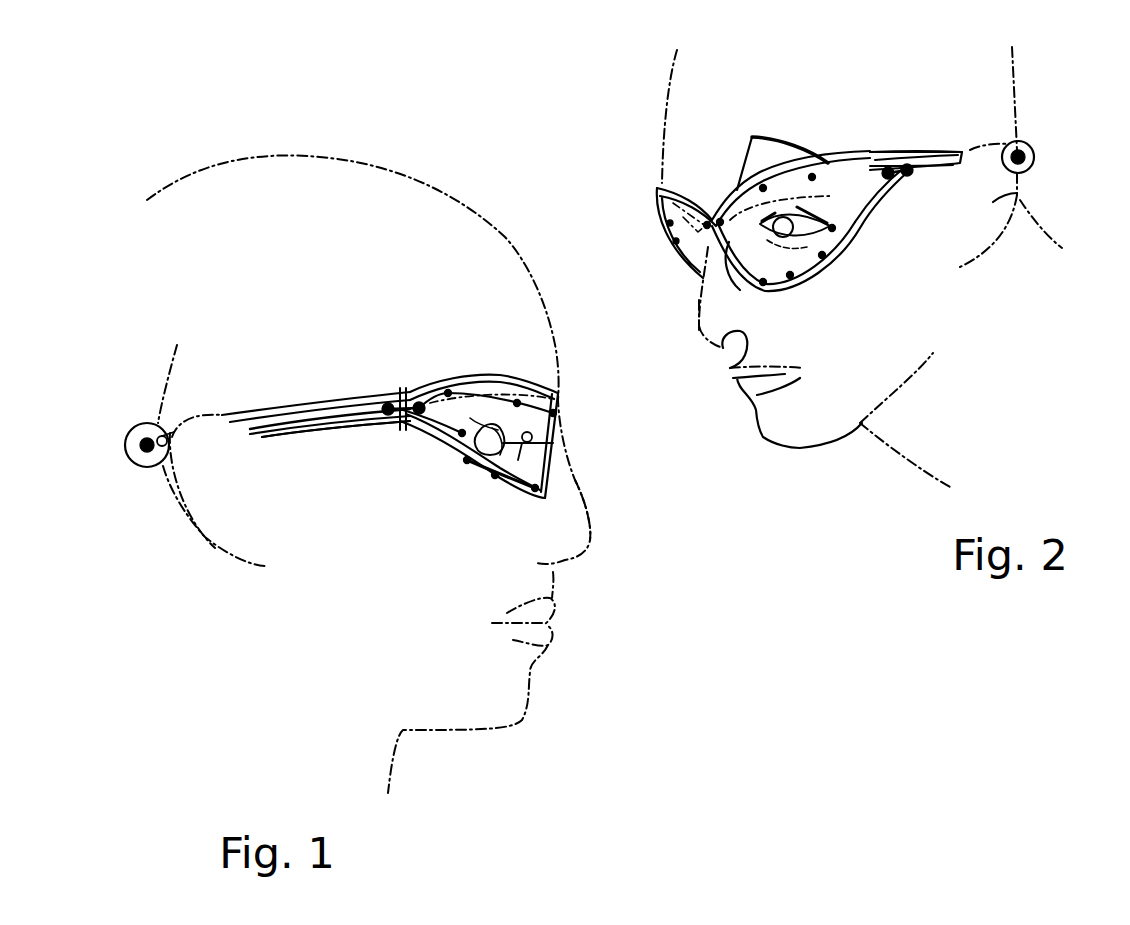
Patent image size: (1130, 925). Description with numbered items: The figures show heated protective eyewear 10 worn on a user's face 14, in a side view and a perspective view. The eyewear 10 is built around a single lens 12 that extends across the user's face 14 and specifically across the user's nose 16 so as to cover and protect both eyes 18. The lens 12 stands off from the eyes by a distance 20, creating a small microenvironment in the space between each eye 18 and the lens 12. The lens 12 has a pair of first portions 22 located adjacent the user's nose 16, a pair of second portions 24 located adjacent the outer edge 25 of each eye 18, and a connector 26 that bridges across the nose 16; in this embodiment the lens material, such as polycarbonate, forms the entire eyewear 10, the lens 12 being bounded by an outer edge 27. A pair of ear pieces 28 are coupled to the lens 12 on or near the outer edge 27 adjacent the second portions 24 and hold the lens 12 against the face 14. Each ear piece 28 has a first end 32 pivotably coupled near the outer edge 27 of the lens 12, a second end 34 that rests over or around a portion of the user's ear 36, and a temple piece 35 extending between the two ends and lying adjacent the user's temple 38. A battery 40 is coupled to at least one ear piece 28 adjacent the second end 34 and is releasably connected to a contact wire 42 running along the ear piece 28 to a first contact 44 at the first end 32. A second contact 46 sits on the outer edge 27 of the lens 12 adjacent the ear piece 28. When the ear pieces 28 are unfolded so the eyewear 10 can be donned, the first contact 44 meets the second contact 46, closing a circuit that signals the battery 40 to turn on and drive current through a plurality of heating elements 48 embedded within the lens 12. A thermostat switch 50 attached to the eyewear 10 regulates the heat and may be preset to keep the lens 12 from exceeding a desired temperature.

In FIG. 1, the eyewear 10 is at (625, 122).
In FIG. 1, the lens 12 is at (512, 492).
In FIG. 1, the user's face 14 is at (606, 488).
In FIG. 2, the user's face 14 is at (677, 453).
In FIG. 1, the user's nose 16 is at (590, 534).
In FIG. 2, the user's nose 16 is at (700, 330).
In FIG. 1, the user's eyes 18 is at (450, 403).
In FIG. 2, the user's eyes 18 is at (797, 196).
In FIG. 1, the distance 20 is at (528, 457).
In FIG. 2, the first portions 22 is at (766, 332).
In FIG. 2, the second portions 24 is at (860, 220).
In FIG. 2, the outer edge of user's eye 25 is at (806, 245).
In FIG. 2, the connector 26 is at (702, 276).
In FIG. 1, the outer edge of lens 27 is at (457, 470).
In FIG. 2, the outer edge of lens 27 is at (833, 268).
In FIG. 1, the ear pieces 28 is at (230, 411).
In FIG. 2, the ear pieces 28 is at (1007, 147).
In FIG. 1, the first end 32 is at (401, 396).
In FIG. 2, the first end 32 is at (907, 170).
In FIG. 1, the second end 34 is at (140, 424).
In FIG. 2, the second end 34 is at (1030, 148).
In FIG. 1, the temple piece 35 is at (302, 404).
In FIG. 2, the temple piece 35 is at (932, 150).
In FIG. 1, the user's ear 36 is at (200, 505).
In FIG. 2, the user's ear 36 is at (1017, 193).
In FIG. 1, the user's temple 38 is at (290, 438).
In FIG. 2, the user's temple 38 is at (933, 188).
In FIG. 1, the battery 40 is at (140, 449).
In FIG. 2, the battery 40 is at (1033, 151).
In FIG. 1, the contact wire 42 is at (337, 420).
In FIG. 1, the first contact 44 is at (388, 407).
In FIG. 2, the first contact 44 is at (905, 175).
In FIG. 1, the second contact 46 is at (419, 405).
In FIG. 2, the second contact 46 is at (888, 173).
In FIG. 1, the heating elements 48 is at (517, 403).
In FIG. 2, the heating elements 48 is at (678, 188).
In FIG. 1, the thermostat switch 50 is at (182, 383).
In FIG. 2, the thermostat switch 50 is at (1013, 145).